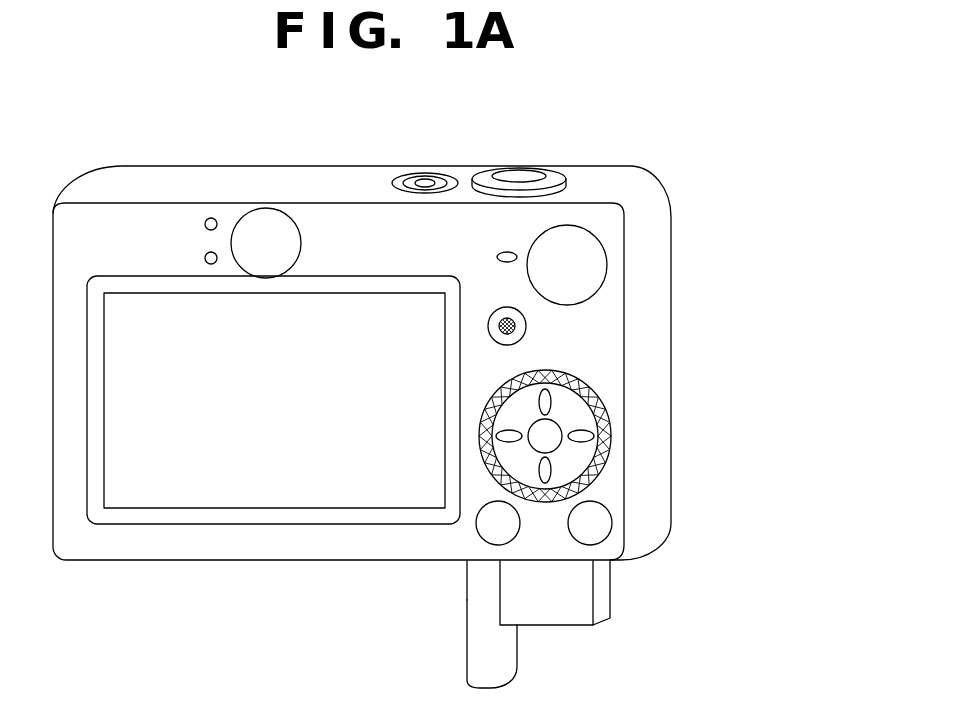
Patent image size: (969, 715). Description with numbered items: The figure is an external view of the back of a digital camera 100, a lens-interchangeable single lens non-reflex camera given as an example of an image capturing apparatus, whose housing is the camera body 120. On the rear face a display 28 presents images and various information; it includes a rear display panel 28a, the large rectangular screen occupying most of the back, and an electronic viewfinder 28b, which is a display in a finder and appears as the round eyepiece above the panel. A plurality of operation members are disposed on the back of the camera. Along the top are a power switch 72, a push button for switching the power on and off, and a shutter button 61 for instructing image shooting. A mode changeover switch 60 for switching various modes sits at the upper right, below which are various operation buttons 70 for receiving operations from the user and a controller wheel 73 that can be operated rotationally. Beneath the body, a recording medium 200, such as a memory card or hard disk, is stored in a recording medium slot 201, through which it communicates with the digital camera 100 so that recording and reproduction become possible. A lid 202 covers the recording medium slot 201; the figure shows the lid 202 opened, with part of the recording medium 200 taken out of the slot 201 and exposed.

The digital camera 100 is at (750, 115).
The camera body 120 is at (671, 263).
The display 28 is at (137, 102).
The rear display panel 28a is at (172, 313).
The electronic viewfinder 28b is at (268, 226).
The power switch 72 is at (403, 174).
The shutter button 61 is at (533, 168).
The mode changeover switch 60 is at (583, 238).
The operation buttons 70 is at (507, 522).
The controller wheel 73 is at (488, 405).
The recording medium 200 is at (583, 592).
The recording medium slot 201 is at (515, 562).
The lid 202 is at (520, 663).